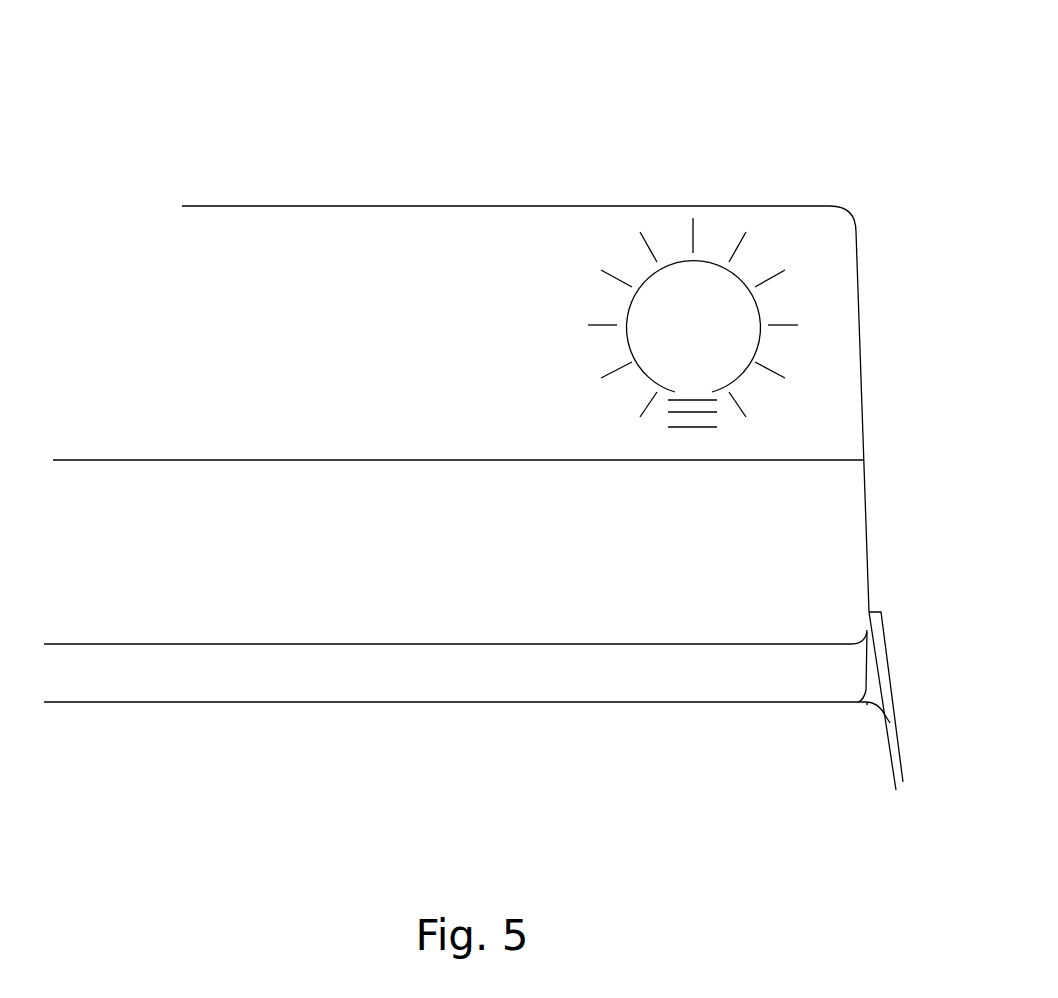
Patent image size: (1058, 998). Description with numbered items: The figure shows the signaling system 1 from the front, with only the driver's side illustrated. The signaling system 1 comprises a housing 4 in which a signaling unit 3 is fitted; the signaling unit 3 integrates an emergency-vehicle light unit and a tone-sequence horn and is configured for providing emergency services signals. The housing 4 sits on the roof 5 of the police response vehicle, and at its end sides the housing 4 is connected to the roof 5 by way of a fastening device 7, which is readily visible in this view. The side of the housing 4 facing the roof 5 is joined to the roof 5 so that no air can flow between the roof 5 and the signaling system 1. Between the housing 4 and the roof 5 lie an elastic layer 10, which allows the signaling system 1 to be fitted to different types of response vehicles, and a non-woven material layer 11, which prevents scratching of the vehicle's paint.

The signaling system 1 is at (810, 95).
The signaling unit 3 is at (653, 320).
The housing 4 is at (203, 485).
The roof 5 is at (839, 740).
The fastening device 7 is at (885, 633).
The elastic layer 10 is at (153, 677).
The non-woven material layer 11 is at (508, 702).